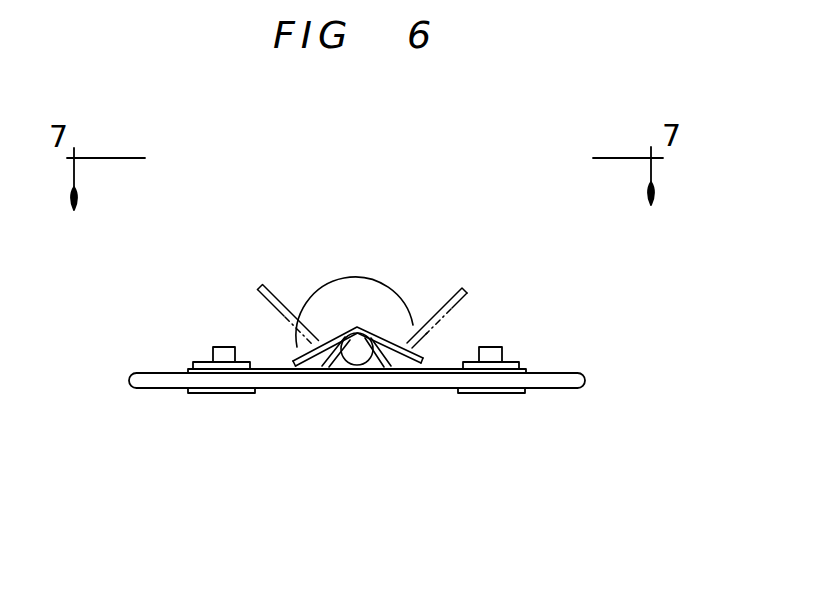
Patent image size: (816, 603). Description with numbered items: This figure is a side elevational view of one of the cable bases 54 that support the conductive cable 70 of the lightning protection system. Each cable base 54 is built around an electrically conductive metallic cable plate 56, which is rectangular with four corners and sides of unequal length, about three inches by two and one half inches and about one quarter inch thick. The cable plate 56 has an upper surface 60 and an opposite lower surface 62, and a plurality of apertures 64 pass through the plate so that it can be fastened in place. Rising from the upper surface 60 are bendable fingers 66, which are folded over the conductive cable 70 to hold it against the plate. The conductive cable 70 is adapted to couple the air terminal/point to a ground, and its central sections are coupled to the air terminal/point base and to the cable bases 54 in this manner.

The cable base 54 is at (528, 371).
The cable plate 56 is at (432, 383).
The upper surface 60 is at (268, 368).
The lower surface 62 is at (273, 378).
The apertures 64 is at (490, 347).
The bendable fingers 66 is at (297, 352).
The conductive cable 70 is at (360, 352).